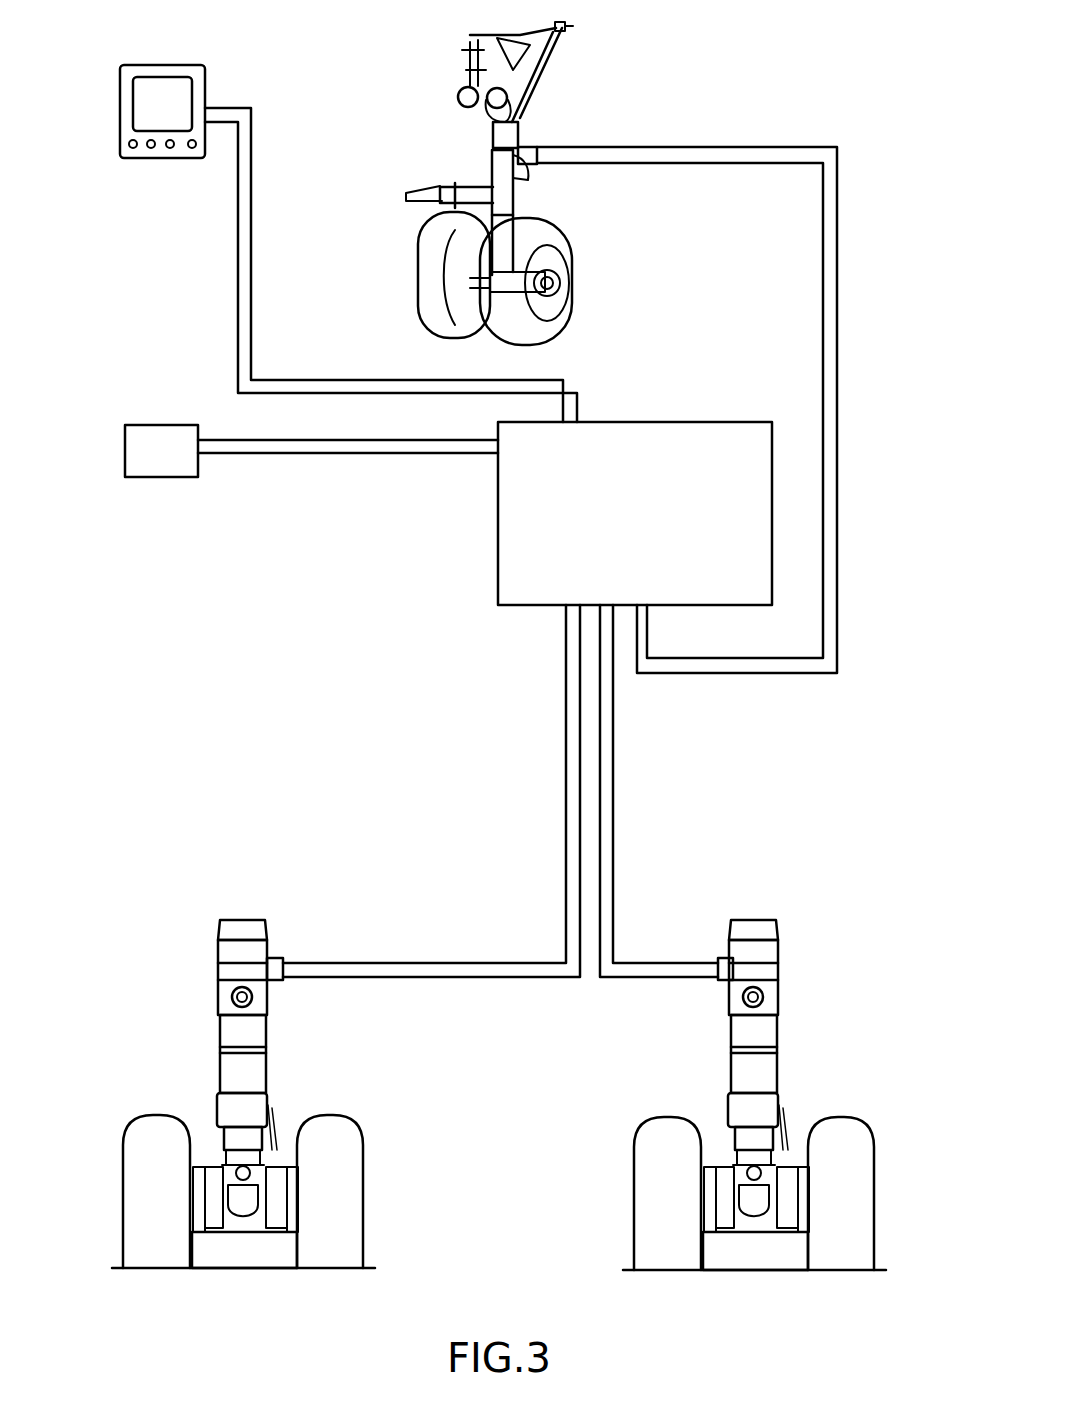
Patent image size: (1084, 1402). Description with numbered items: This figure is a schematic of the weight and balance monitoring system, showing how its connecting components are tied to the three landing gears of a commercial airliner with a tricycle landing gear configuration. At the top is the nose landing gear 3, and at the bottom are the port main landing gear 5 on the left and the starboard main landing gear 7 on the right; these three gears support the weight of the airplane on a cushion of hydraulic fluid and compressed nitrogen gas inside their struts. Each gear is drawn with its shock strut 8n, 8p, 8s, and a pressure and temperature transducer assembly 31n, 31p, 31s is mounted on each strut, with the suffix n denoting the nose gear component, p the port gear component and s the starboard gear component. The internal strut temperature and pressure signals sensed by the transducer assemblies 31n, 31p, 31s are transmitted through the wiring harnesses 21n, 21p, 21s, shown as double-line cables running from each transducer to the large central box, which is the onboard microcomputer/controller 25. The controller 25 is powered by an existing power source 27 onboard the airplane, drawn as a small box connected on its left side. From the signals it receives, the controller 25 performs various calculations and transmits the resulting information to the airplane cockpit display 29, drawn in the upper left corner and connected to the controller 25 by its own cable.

The airplane cockpit display 29 is at (159, 84).
The existing power source 27 is at (167, 437).
The onboard microcomputer/controller 25 is at (506, 536).
The wiring harness 21n is at (823, 247).
The wiring harness 21p is at (566, 753).
The wiring harness 21s is at (660, 982).
The nose landing gear strut 8n is at (493, 132).
The port main landing gear strut 8p is at (220, 952).
The starboard main landing gear strut 8s is at (770, 1042).
The pressure and temperature transducer assembly 31n is at (537, 150).
The pressure and temperature transducer assembly 31p is at (278, 958).
The pressure and temperature transducer assembly 31s is at (723, 958).
The nose landing gear 3 is at (532, 226).
The port main landing gear 5 is at (262, 1099).
The starboard main landing gear 7 is at (745, 1112).